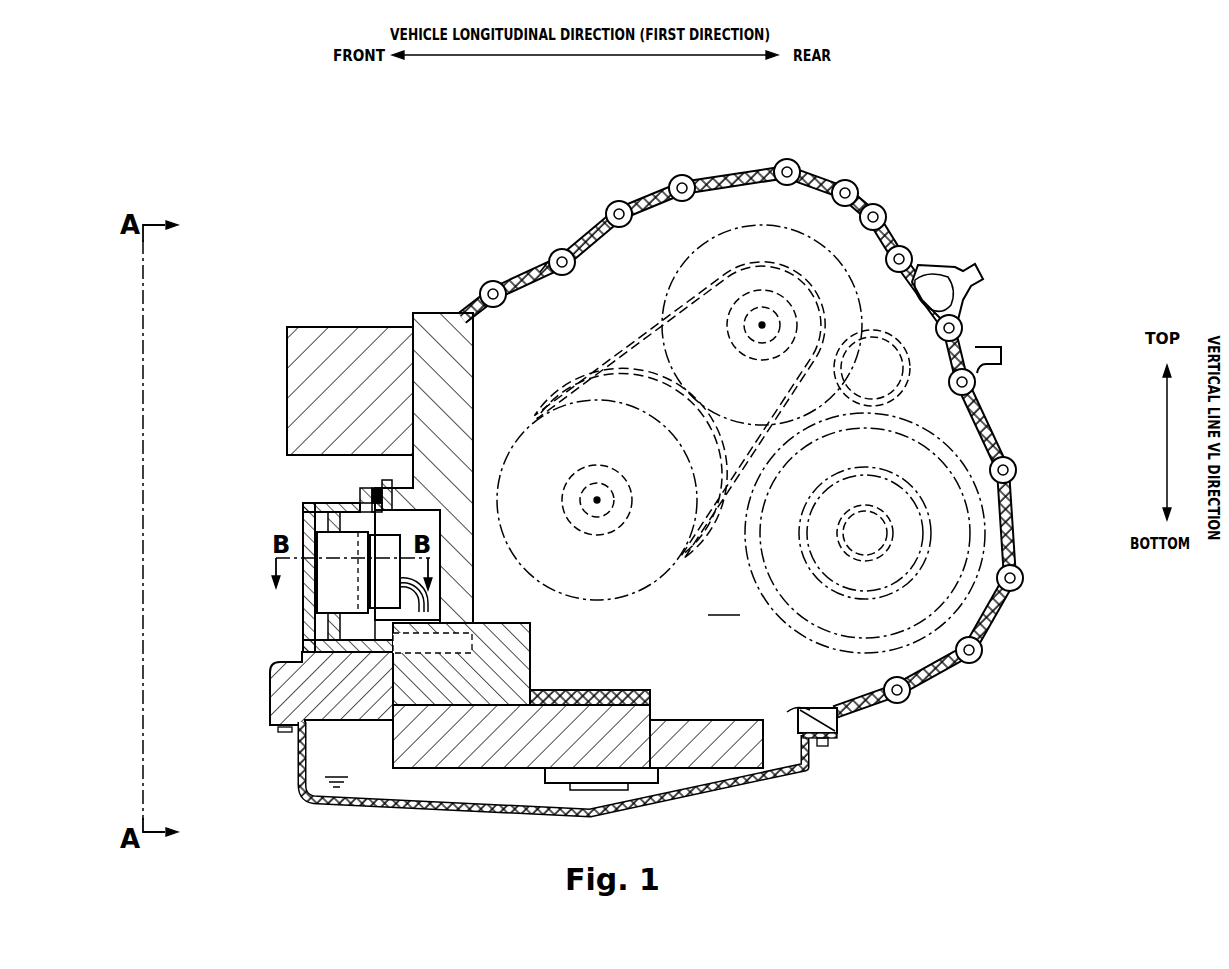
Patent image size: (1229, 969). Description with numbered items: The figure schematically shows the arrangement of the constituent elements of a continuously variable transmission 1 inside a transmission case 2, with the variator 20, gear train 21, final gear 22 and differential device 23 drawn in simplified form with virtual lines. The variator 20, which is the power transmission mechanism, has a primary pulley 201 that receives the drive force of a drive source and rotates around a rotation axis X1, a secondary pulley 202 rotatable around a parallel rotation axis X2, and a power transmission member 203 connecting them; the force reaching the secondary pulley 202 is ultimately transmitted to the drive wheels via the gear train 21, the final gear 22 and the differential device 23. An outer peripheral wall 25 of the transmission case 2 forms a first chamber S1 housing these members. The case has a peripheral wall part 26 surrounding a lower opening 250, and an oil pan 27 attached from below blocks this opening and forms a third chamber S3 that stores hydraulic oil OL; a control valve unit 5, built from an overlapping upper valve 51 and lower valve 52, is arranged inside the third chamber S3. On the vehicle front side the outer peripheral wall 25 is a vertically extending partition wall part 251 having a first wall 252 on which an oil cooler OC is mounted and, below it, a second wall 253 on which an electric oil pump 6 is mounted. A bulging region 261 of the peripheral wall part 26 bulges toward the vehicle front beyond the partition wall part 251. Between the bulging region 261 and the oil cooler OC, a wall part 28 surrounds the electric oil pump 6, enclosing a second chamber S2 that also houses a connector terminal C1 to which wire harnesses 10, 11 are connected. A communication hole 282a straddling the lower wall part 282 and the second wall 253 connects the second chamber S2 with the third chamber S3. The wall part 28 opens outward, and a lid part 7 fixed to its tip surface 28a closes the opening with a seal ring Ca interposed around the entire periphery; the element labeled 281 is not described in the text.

The continuously variable transmission 1 is at (363, 205).
The transmission case 2 is at (955, 685).
The control valve unit 5 is at (578, 682).
The upper valve 51 is at (620, 690).
The lower valve 52 is at (706, 704).
The electric oil pump 6 is at (458, 553).
The lid part 7 is at (303, 610).
The wire harness 10 is at (430, 608).
The wire harness 11 is at (440, 590).
The variator 20 is at (698, 316).
The primary pulley 201 is at (615, 400).
The secondary pulley 202 is at (738, 226).
The power transmission member 203 is at (692, 295).
The gear train 21 is at (905, 378).
The final gear 22 is at (963, 465).
The differential device 23 is at (900, 537).
The outer peripheral wall 25 is at (540, 272).
The lower opening 250 is at (827, 692).
The partition wall part 251 is at (588, 497).
The first wall 252 is at (480, 395).
The second wall 253 is at (498, 525).
The peripheral wall part 26 is at (843, 730).
The bulging region 261 is at (268, 680).
The oil pan 27 is at (790, 795).
The wall part 28 is at (374, 486).
The tip surface 28a is at (366, 482).
The oil supply passage 281 is at (392, 500).
The lower wall part 282 is at (398, 643).
The communication hole 282a is at (388, 656).
The oil cooler OC is at (282, 325).
The hydraulic oil OL is at (345, 790).
The first chamber S1 is at (724, 600).
The second chamber S2 is at (422, 516).
The third chamber S3 is at (543, 795).
The rotation axis X1 is at (599, 503).
The rotation axis X2 is at (760, 328).
The connector terminal C1 is at (372, 585).
The seal ring Ca is at (364, 522).